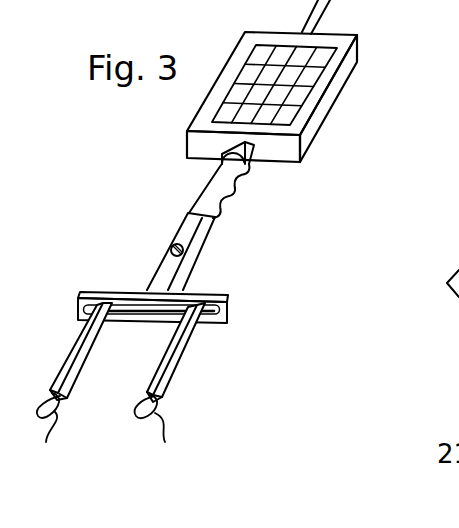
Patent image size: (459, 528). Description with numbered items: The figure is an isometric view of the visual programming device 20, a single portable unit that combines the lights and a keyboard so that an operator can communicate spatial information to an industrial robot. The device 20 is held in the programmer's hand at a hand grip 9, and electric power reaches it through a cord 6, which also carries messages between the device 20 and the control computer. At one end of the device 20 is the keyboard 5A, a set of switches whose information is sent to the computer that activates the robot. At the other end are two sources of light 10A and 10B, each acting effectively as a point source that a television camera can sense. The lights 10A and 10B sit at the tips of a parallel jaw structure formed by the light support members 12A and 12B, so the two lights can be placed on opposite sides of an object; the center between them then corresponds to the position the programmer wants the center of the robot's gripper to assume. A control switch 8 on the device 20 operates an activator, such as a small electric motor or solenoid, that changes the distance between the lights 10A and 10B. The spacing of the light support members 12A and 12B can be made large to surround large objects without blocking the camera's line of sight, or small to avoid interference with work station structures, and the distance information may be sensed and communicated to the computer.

The keyboard 5A is at (323, 112).
The cord 6 is at (332, 15).
The hand grip 9 is at (216, 190).
The control switch 8 is at (181, 244).
The visual programming device 20 is at (195, 281).
The light support member 12A is at (82, 347).
The light support member 12B is at (183, 360).
The source of light 10A is at (45, 435).
The source of light 10B is at (165, 436).